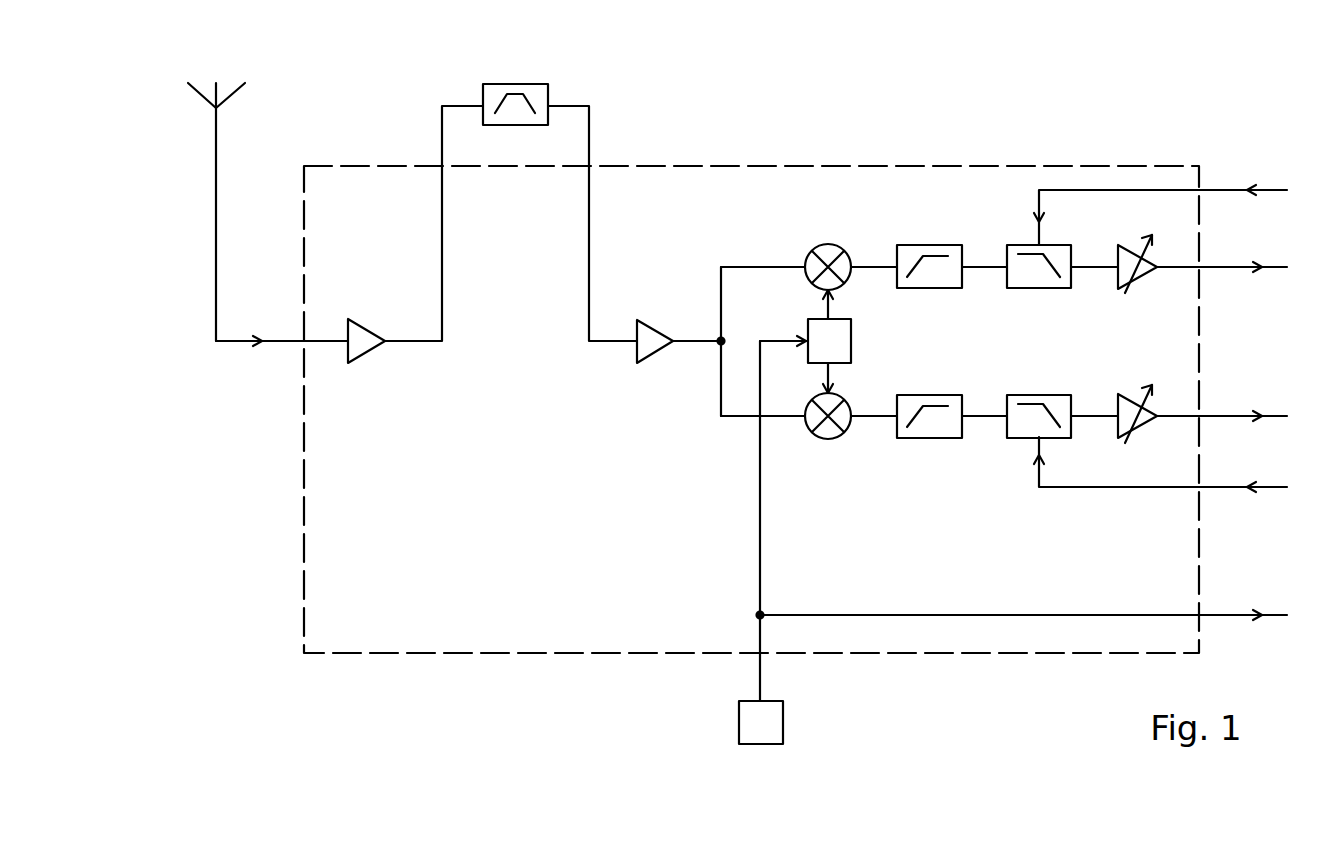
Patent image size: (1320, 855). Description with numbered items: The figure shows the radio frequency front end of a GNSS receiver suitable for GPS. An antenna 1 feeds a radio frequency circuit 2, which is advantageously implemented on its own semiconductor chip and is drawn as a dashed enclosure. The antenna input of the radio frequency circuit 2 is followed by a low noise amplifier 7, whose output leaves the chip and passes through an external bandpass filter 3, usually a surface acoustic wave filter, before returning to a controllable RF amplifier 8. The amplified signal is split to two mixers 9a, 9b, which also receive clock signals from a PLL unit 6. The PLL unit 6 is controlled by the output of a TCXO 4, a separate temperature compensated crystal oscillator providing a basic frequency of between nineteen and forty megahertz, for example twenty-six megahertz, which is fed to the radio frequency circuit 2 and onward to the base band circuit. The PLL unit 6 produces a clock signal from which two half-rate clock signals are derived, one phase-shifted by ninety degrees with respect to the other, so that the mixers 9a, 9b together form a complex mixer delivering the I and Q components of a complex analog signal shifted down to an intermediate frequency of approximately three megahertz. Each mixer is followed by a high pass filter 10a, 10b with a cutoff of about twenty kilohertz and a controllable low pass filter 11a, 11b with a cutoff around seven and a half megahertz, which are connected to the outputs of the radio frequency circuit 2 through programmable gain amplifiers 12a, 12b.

The antenna 1 is at (228, 93).
The radio frequency circuit 2 is at (345, 662).
The bandpass filter 3 is at (533, 87).
The TCXO 4 is at (783, 717).
The PLL unit 6 is at (851, 334).
The low noise amplifier 7 is at (365, 345).
The controllable RF amplifier 8 is at (655, 350).
The mixer 9a is at (828, 248).
The mixer 9b is at (828, 435).
The high pass filter 10a is at (927, 252).
The high pass filter 10b is at (927, 428).
The controllable low pass filter 11a is at (1060, 253).
The controllable low pass filter 11b is at (1058, 432).
The programmable gain amplifier 12a is at (1127, 252).
The programmable gain amplifier 12b is at (1145, 417).